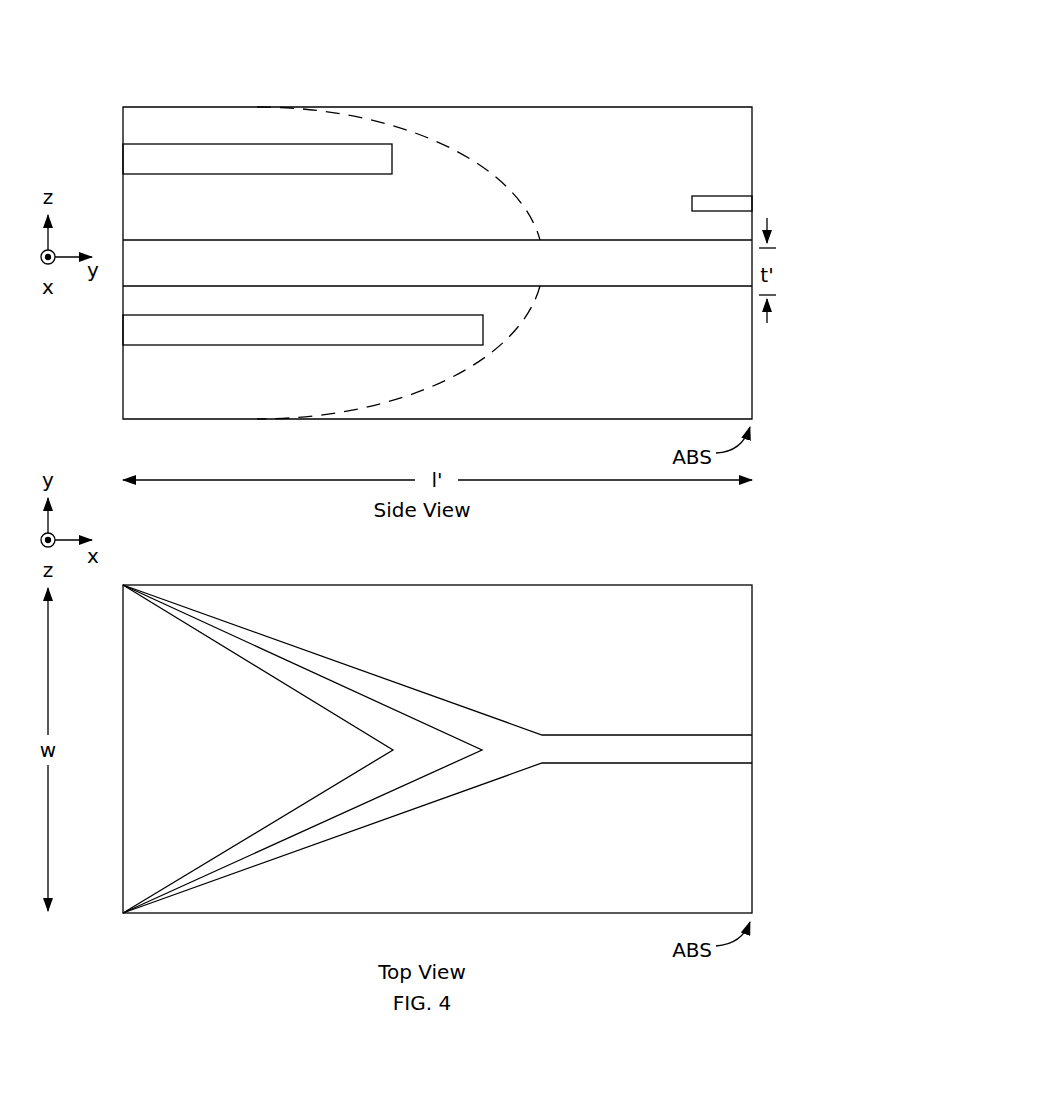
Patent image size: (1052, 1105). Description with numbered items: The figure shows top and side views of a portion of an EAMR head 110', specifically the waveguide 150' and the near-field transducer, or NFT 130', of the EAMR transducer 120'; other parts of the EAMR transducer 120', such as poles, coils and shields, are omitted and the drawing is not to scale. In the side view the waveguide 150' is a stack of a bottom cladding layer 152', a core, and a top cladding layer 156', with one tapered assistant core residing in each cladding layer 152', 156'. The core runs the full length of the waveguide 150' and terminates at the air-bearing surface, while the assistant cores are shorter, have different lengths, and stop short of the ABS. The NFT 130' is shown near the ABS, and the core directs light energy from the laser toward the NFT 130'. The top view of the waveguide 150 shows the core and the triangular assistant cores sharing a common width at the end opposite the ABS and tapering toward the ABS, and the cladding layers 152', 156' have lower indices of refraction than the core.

The EAMR head 110' is at (439, 247).
The EAMR transducer 120' is at (439, 247).
The waveguide 150' is at (439, 261).
The waveguide 150 is at (440, 744).
The cladding layer 152' is at (412, 374).
The cladding layer 156' is at (439, 160).
The NFT 130' is at (748, 178).